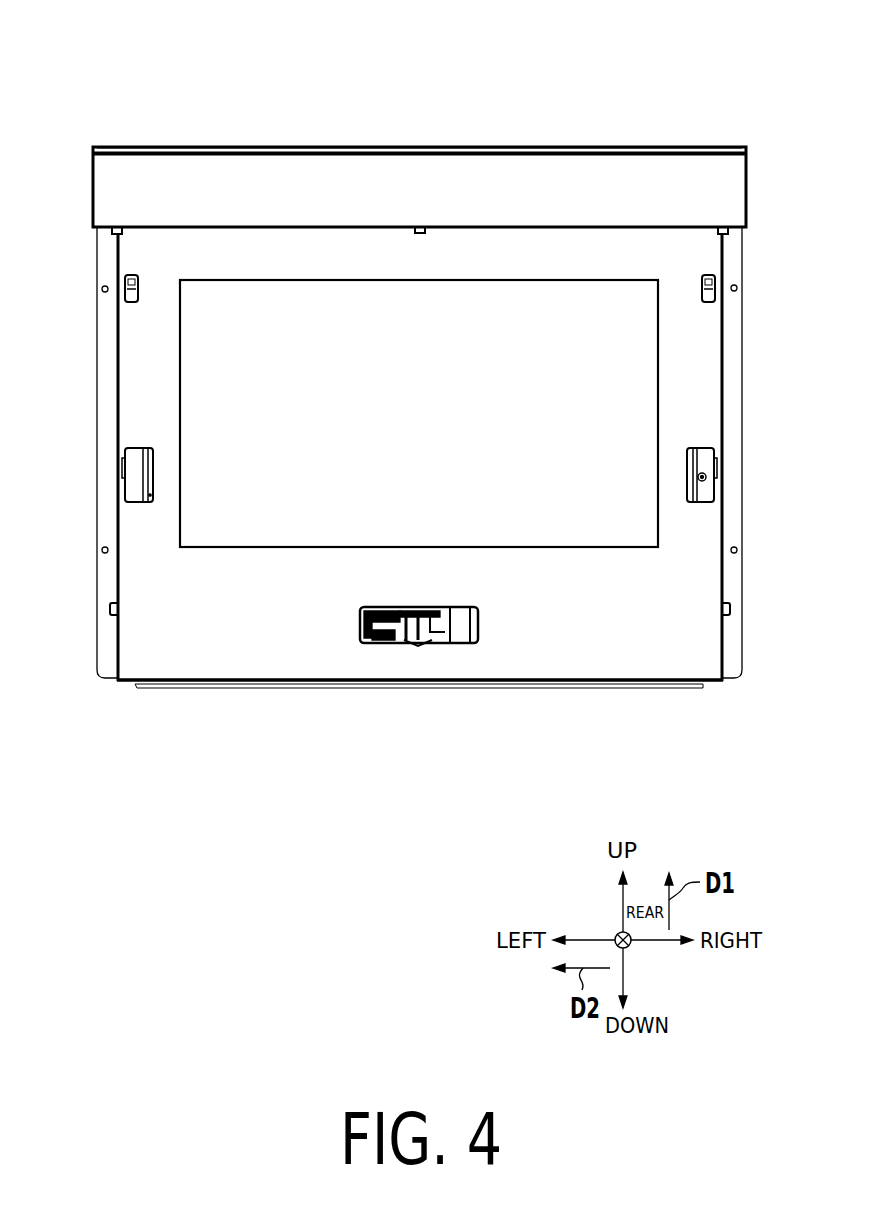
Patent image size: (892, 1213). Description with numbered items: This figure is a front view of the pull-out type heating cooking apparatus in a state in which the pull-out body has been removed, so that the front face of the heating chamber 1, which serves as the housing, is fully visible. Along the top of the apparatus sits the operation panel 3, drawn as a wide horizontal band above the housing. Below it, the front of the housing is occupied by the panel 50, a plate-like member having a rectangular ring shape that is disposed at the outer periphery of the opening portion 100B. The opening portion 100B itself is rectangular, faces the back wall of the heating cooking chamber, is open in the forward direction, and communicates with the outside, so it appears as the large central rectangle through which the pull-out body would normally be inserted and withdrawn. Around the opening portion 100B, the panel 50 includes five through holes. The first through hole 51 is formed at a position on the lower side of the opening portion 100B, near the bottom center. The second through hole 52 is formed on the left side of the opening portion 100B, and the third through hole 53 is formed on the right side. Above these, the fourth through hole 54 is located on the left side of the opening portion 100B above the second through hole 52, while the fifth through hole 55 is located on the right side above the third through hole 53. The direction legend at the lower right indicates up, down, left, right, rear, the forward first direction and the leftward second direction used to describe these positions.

The heating chamber 1 is at (134, 80).
The operation panel 3 is at (704, 182).
The panel 50 is at (139, 328).
The opening portion 100B is at (219, 322).
The first through hole 51 is at (423, 640).
The second through hole 52 is at (133, 482).
The third through hole 53 is at (706, 477).
The fourth through hole 54 is at (126, 286).
The fifth through hole 55 is at (713, 286).